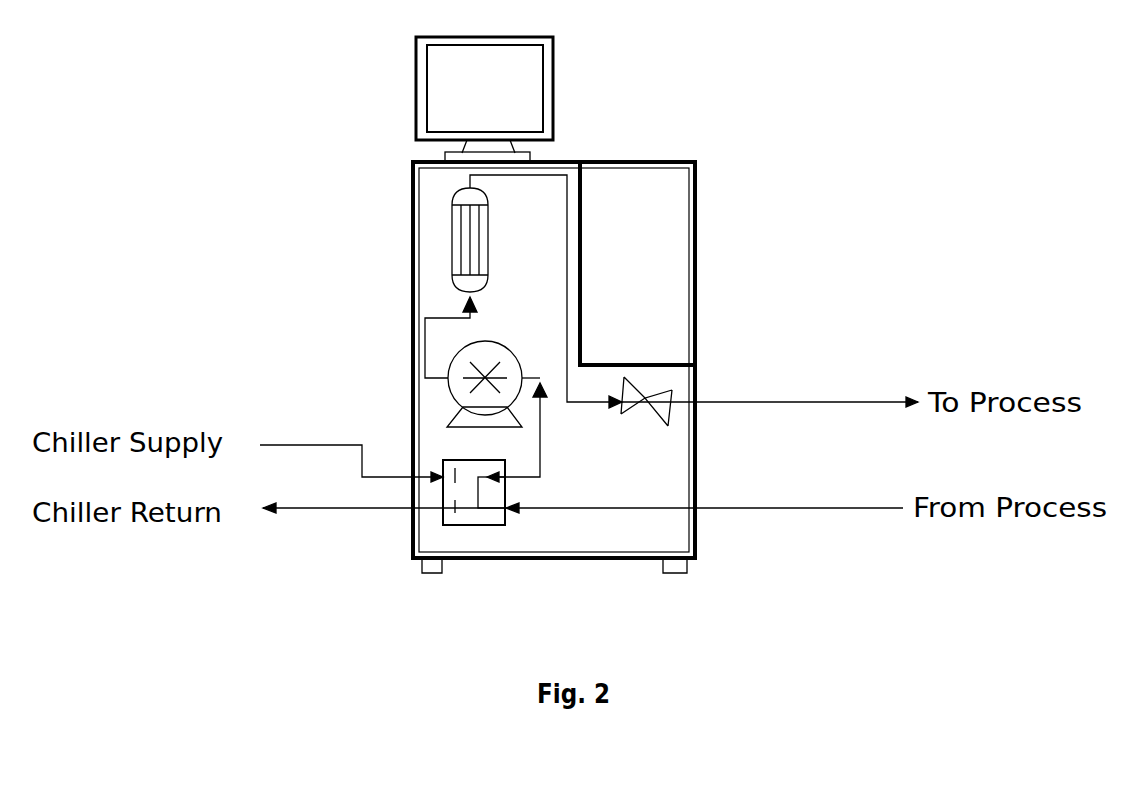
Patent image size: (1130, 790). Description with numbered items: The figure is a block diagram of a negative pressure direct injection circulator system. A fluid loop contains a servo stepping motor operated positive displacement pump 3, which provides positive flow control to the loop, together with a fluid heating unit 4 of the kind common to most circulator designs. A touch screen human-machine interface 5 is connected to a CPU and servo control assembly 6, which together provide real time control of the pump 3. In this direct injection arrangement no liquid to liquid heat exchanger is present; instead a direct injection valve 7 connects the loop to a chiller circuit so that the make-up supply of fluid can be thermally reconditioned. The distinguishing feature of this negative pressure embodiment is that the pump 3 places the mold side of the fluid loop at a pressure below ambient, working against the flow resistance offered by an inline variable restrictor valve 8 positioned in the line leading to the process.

The pump 3 is at (448, 398).
The fluid heating unit 4 is at (452, 253).
The touch screen human-machine interface 5 is at (416, 88).
The CPU and servo control assembly 6 is at (695, 229).
The direct injection valve 7 is at (472, 525).
The inline variable restrictor valve 8 is at (668, 420).